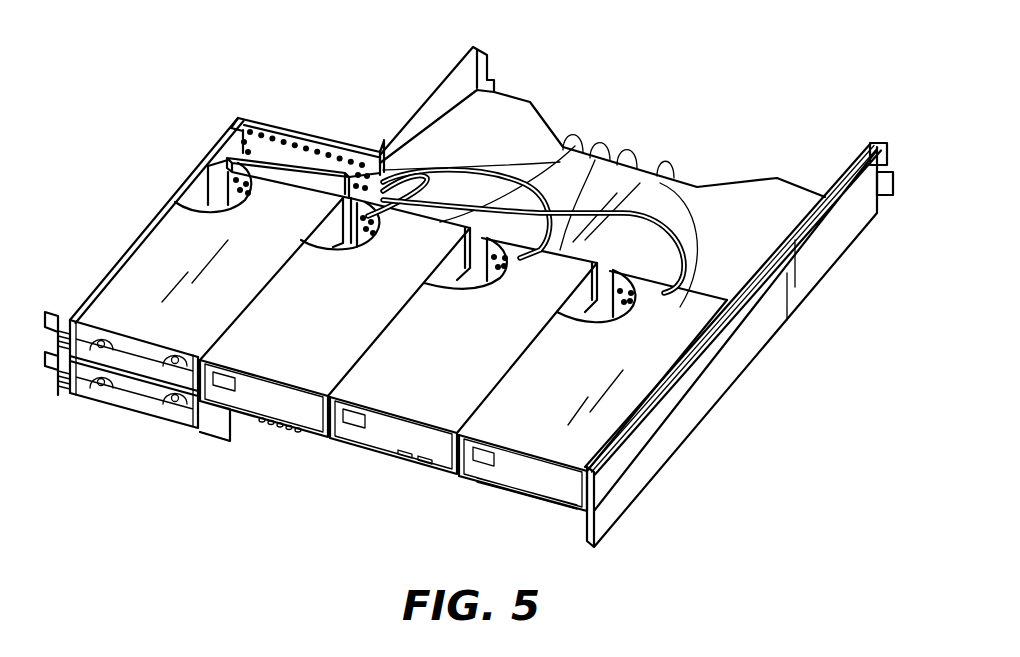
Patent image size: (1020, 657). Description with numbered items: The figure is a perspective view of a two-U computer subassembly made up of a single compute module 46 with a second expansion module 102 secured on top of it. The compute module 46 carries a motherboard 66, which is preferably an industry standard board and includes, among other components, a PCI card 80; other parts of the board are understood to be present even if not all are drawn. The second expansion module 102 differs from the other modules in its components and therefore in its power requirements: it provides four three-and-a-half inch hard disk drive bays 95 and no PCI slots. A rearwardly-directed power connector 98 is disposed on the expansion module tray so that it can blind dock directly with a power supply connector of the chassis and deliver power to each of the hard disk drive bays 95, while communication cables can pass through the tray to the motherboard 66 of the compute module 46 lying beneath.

The compute module 46 is at (640, 472).
The motherboard 66 is at (530, 163).
The PCI card 80 is at (614, 351).
The hard disk drive bays 95 is at (133, 363).
The rearwardly-directed power connector 98 is at (280, 153).
The second expansion module 102 is at (415, 98).